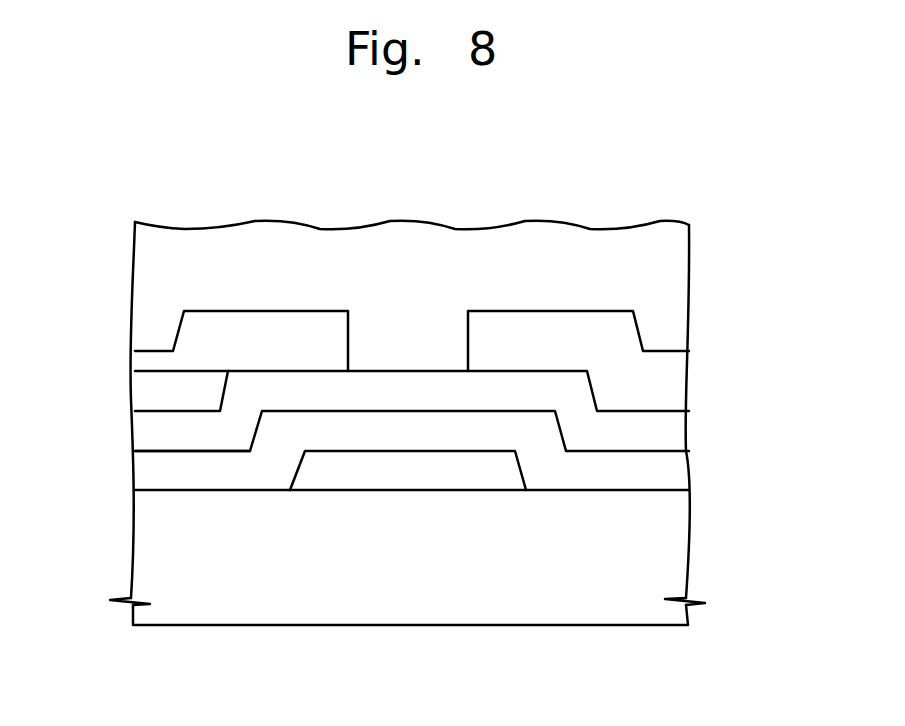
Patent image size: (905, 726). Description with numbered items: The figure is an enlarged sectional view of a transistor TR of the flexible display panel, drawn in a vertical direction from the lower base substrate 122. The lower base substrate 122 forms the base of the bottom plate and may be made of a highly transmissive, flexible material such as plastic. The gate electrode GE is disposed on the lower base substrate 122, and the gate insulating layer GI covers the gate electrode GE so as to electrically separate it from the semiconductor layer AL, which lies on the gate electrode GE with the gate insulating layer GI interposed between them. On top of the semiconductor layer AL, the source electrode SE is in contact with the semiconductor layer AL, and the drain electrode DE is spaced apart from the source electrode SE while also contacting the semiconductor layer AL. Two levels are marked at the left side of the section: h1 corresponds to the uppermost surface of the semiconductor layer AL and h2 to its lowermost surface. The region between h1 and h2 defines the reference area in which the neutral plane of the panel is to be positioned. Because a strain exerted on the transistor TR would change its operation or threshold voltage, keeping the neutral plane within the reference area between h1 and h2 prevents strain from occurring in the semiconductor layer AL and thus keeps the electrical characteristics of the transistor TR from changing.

The transistor TR is at (592, 298).
The source electrode SE is at (212, 322).
The drain electrode DE is at (672, 385).
The semiconductor layer AL is at (672, 435).
The gate insulating layer GI is at (672, 474).
The gate electrode GE is at (432, 477).
The lower base substrate 122 is at (672, 546).
The uppermost surface of the semiconductor layer h1 is at (115, 371).
The lowermost surface of the semiconductor layer h2 is at (115, 451).